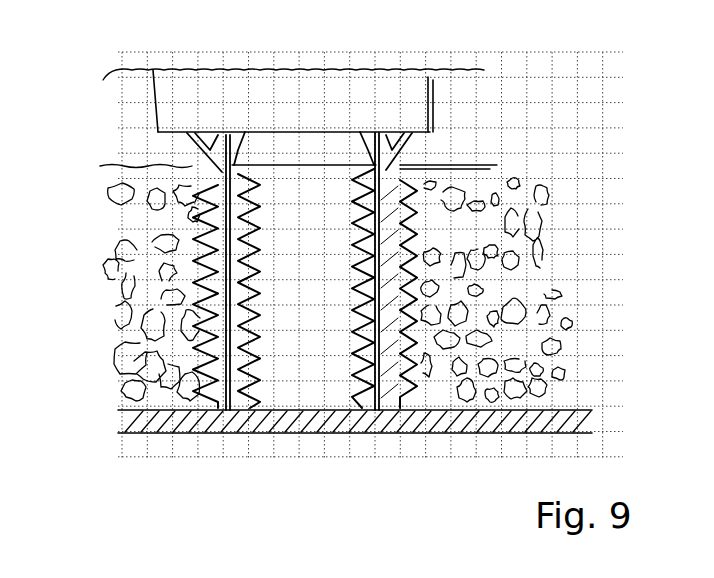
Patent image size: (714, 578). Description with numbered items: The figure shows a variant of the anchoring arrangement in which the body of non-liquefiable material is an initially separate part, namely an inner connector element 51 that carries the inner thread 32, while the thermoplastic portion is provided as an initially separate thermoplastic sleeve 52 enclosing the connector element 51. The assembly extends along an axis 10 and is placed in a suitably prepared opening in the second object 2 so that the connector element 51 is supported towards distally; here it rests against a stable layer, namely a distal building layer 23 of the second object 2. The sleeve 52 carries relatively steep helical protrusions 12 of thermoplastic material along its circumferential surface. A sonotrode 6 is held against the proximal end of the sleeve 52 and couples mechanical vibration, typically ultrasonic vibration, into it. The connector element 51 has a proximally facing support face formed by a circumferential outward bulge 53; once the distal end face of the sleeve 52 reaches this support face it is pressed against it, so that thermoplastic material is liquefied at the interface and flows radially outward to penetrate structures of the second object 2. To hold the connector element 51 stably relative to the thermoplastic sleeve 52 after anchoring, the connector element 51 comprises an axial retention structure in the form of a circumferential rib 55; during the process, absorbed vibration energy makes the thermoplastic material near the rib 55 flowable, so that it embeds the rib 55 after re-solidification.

The second object 2 is at (493, 267).
The sonotrode 6 is at (410, 100).
The axis 10 is at (303, 117).
The helical protrusions 12 is at (412, 298).
The distal building layer 23 is at (252, 420).
The inner thread 32 is at (252, 300).
The inner connector element 51 is at (362, 293).
The thermoplastic sleeve 52 is at (213, 258).
The circumferential outward bulge 53 is at (390, 400).
The circumferential rib 55 is at (227, 307).